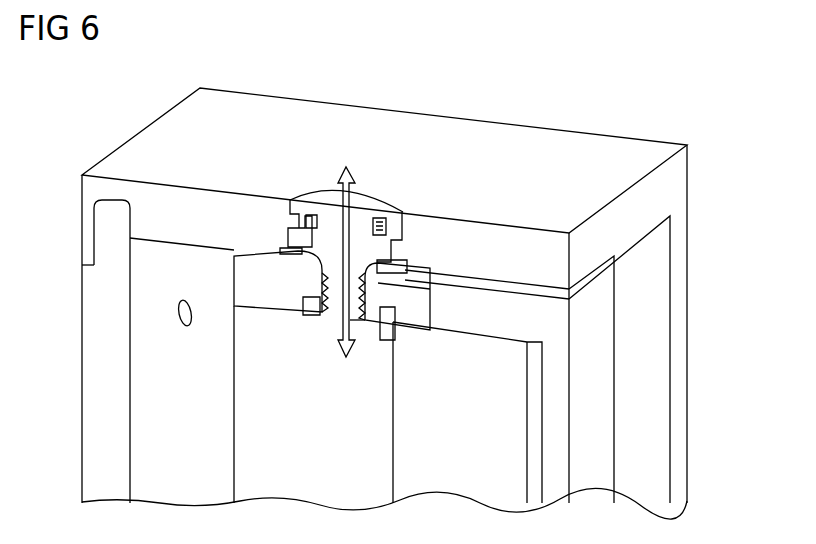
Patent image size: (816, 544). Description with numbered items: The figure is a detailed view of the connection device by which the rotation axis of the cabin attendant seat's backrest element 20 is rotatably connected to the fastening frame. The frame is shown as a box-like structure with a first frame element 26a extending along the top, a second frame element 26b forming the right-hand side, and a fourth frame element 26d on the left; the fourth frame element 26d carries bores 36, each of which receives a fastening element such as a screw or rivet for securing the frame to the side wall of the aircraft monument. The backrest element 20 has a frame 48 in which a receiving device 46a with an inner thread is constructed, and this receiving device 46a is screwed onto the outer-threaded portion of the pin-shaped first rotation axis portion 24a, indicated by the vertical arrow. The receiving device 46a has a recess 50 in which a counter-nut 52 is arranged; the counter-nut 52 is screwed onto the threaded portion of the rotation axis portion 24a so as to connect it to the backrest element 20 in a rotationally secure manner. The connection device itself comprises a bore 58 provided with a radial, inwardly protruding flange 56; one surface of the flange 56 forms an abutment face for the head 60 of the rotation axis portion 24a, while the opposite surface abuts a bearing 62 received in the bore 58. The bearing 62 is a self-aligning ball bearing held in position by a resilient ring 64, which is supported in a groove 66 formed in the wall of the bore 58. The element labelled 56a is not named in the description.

The backrest element 20 is at (597, 422).
The first portion of the rotation axis 24a is at (327, 196).
The first frame element 26a is at (585, 152).
The second frame element 26b is at (680, 246).
The fourth frame element 26d is at (148, 258).
The bores 36 is at (190, 325).
The receiving device 46a is at (282, 336).
The frame of the backrest element 48 is at (553, 436).
The recess 50 is at (396, 326).
The counter-nut 52 is at (376, 323).
The flange 56 is at (296, 202).
The guide block 56a is at (390, 296).
The bore 58 is at (378, 196).
The head 60 is at (396, 204).
The bearing 62 is at (408, 258).
The resilient ring 64 is at (291, 277).
The groove 66 is at (288, 247).